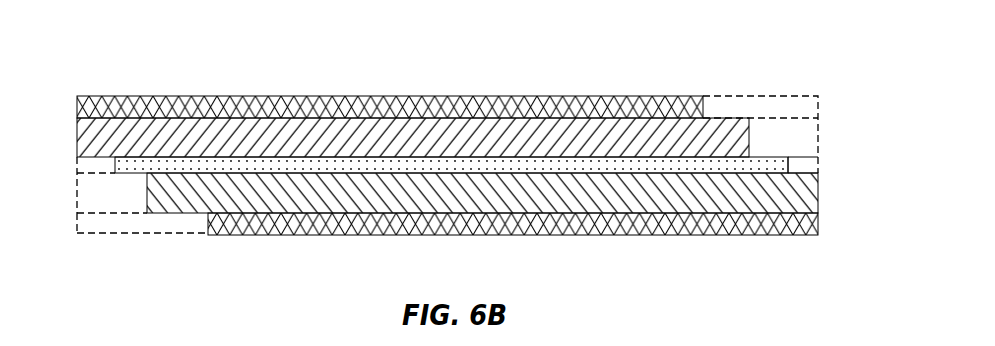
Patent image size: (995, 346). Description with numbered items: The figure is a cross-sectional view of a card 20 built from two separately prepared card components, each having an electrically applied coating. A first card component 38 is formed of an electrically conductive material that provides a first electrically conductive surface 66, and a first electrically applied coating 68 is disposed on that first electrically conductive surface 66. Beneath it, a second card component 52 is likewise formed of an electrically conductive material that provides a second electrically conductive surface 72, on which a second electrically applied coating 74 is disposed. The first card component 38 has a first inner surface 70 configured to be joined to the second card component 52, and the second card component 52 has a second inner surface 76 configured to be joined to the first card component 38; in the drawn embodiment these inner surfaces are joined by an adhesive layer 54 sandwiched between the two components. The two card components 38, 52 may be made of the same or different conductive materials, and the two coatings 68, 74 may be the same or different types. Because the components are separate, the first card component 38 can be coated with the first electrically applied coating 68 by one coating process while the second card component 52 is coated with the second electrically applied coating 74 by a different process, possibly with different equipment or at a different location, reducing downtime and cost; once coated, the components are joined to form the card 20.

The card 20 is at (452, 164).
The first card component 38 is at (424, 147).
The second card component 52 is at (424, 201).
The adhesive layer 54 is at (763, 173).
The first electrically conductive surface 66 is at (727, 118).
The first electrically applied coating 68 is at (633, 108).
The first inner surface 70 is at (99, 157).
The second electrically conductive surface 72 is at (177, 233).
The second electrically applied coating 74 is at (595, 223).
The second inner surface 76 is at (805, 173).